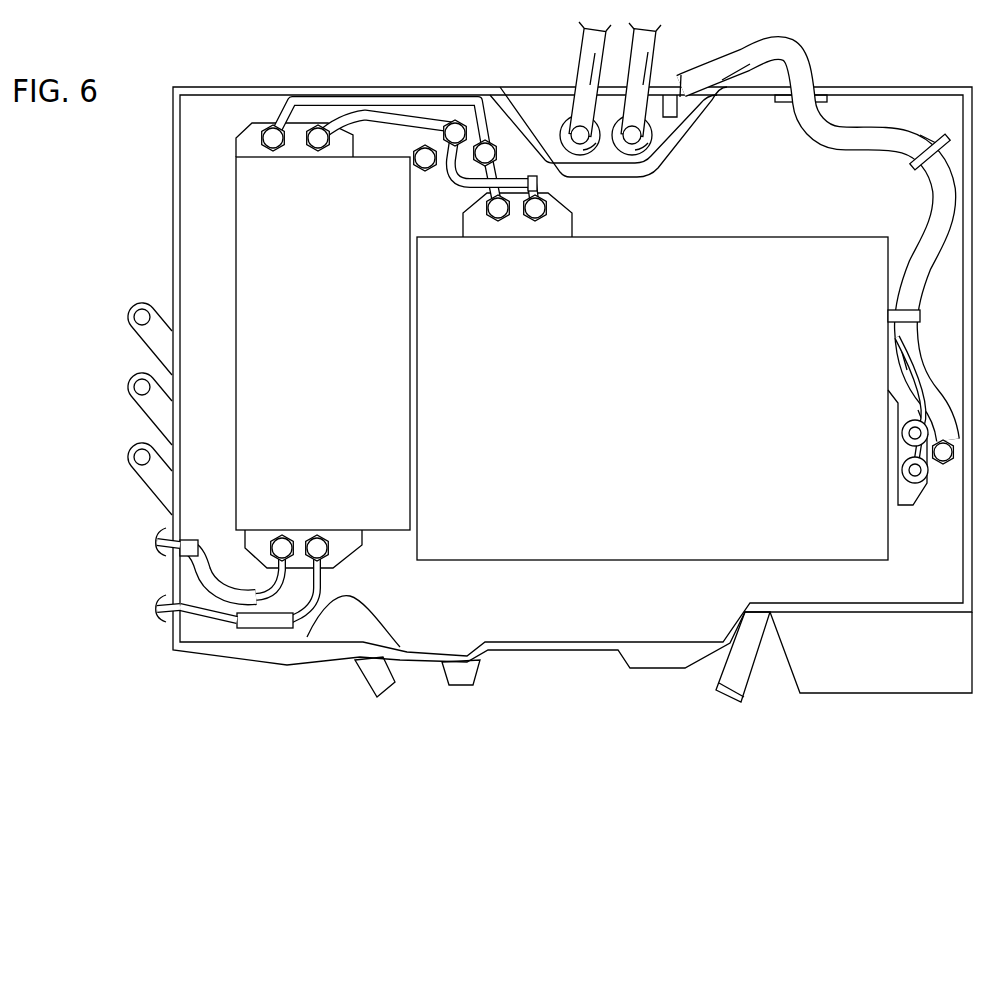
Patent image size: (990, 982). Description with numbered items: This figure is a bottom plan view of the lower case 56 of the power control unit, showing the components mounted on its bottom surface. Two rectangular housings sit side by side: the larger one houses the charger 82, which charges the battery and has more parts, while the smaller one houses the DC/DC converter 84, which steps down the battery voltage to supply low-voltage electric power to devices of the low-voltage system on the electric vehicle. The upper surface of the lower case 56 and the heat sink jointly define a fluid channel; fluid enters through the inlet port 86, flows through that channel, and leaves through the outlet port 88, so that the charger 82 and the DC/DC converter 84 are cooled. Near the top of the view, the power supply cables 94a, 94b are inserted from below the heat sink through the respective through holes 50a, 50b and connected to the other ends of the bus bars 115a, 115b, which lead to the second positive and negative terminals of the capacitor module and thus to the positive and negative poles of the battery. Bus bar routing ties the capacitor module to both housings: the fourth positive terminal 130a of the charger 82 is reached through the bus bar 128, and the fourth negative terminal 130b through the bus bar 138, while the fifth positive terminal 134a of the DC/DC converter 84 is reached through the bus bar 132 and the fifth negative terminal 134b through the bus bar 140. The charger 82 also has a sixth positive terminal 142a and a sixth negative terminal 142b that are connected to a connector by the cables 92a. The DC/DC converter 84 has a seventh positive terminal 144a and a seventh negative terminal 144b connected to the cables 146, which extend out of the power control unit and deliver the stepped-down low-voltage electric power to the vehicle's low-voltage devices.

The through hole 50a is at (645, 138).
The through hole 50b is at (587, 148).
The lower case 56 is at (542, 636).
The charger 82 is at (575, 562).
The DC/DC converter 84 is at (258, 252).
The inlet port 86 is at (743, 683).
The outlet port 88 is at (375, 680).
The cables 92a is at (790, 43).
The power supply cable 94a is at (657, 43).
The power supply cable 94b is at (588, 43).
The bus bar 115a is at (627, 148).
The bus bar 115b is at (570, 147).
The bus bar 128 is at (468, 181).
The fourth positive terminal 130a is at (498, 222).
The fourth negative terminal 130b is at (540, 222).
The bus bar 132 is at (438, 102).
The fifth positive terminal 134a is at (270, 126).
The fifth negative terminal 134b is at (314, 126).
The bus bar 138 is at (540, 180).
The bus bar 140 is at (348, 118).
The sixth positive terminal 142a is at (907, 485).
The sixth negative terminal 142b is at (903, 446).
The seventh positive terminal 144a is at (276, 535).
The seventh negative terminal 144b is at (316, 535).
The cables 146 is at (152, 600).